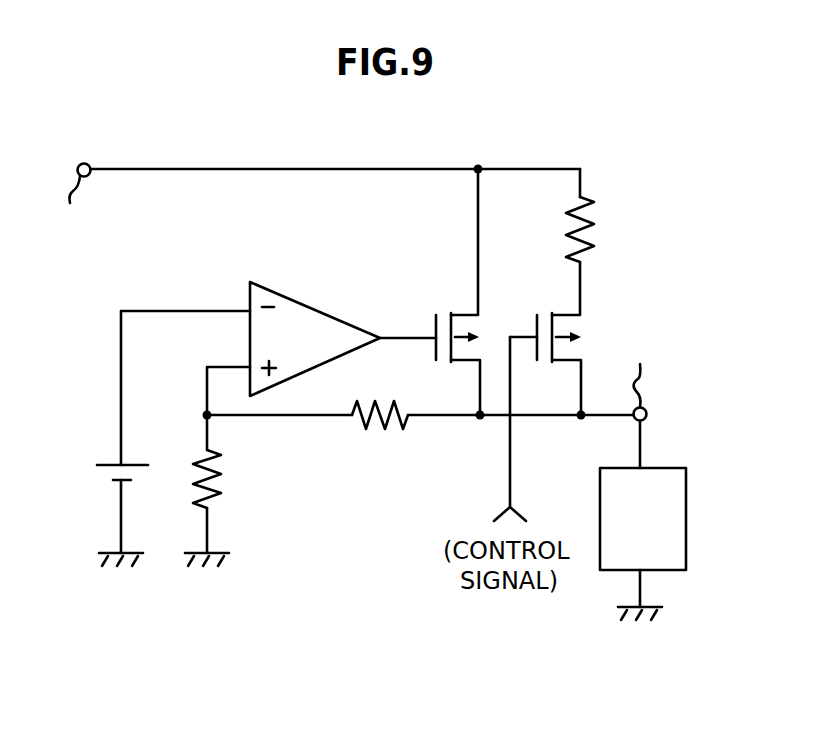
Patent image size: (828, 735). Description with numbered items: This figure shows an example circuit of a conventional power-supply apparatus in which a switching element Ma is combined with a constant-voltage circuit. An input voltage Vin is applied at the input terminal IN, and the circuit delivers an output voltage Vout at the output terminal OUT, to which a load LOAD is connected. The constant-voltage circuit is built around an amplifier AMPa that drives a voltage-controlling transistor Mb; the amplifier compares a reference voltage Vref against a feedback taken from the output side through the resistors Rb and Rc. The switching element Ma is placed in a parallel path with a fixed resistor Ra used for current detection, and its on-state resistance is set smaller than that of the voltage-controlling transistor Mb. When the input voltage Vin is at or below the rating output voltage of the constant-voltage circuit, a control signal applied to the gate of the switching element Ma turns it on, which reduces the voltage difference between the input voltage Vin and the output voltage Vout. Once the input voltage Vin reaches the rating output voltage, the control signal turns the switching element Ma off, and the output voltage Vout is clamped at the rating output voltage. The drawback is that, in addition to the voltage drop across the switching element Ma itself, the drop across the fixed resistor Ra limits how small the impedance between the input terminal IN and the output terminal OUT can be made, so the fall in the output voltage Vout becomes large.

The input voltage Vin is at (80, 170).
The input terminal IN is at (70, 226).
The fixed resistor Ra is at (556, 229).
The voltage-controlling transistor Mb is at (454, 351).
The switching element Ma is at (545, 351).
The amplifier AMPa is at (343, 339).
The resistor Rb is at (380, 438).
The resistor Rc is at (223, 508).
The reference voltage source Vref is at (95, 501).
The output voltage Vout is at (682, 397).
The output terminal OUT is at (641, 352).
The load LOAD is at (643, 520).